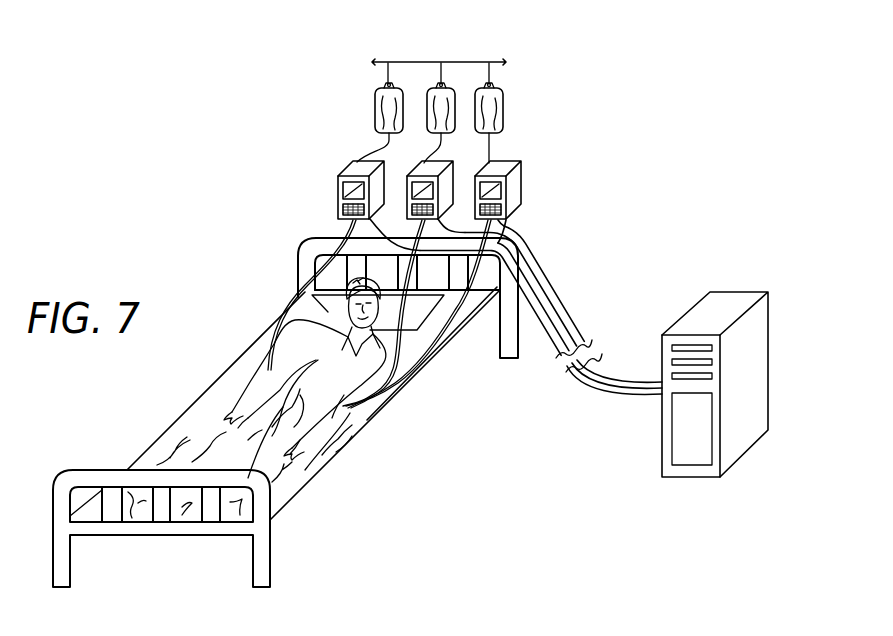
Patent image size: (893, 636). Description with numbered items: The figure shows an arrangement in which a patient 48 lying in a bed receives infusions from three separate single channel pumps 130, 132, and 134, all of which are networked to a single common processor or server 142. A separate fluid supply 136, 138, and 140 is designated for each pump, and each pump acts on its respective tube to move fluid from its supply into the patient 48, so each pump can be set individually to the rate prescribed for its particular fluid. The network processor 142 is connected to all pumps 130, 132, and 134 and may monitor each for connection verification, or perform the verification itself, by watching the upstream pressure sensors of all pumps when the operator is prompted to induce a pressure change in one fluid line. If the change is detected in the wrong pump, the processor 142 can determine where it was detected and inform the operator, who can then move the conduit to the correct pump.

The patient 48 is at (260, 373).
The single channel pump 130 is at (338, 195).
The single channel pump 132 is at (412, 165).
The single channel pump 134 is at (515, 190).
The fluid supply 136 is at (377, 113).
The fluid supply 138 is at (425, 102).
The fluid supply 140 is at (502, 108).
The network processor 142 is at (735, 302).